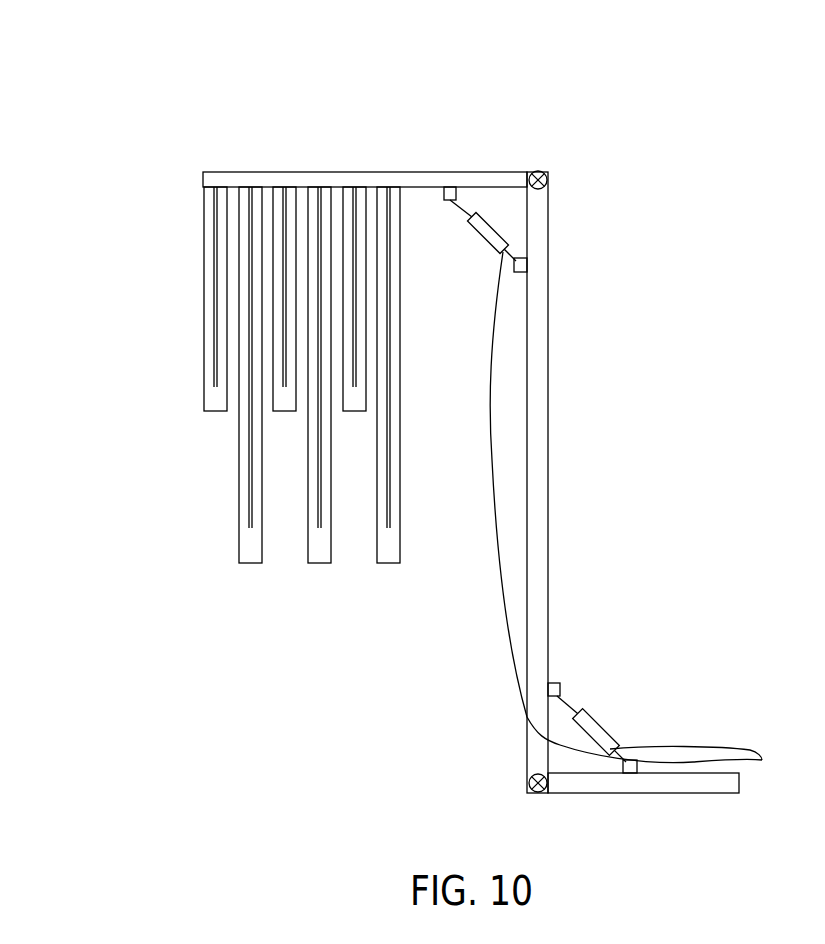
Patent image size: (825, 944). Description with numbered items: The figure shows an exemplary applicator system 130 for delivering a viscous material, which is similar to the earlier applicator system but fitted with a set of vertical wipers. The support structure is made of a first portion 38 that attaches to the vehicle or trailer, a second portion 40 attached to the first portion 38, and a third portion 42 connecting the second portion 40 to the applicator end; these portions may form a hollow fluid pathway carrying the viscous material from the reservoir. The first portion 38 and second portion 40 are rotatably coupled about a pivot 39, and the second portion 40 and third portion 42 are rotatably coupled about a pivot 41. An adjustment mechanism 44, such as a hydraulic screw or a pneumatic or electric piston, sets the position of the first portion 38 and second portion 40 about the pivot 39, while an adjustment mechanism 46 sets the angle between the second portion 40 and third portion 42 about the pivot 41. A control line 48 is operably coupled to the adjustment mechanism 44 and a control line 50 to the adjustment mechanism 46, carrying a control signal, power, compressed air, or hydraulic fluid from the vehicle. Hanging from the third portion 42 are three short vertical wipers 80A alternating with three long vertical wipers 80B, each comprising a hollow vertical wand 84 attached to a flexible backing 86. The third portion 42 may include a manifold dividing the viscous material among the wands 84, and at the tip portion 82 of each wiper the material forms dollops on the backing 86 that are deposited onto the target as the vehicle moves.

The applicator system 130 is at (545, 106).
The third portion 42 is at (432, 171).
The second portion 40 is at (549, 432).
The first portion 38 is at (673, 796).
The pivot 41 is at (549, 182).
The pivot 39 is at (527, 783).
The adjustment mechanism 46 is at (484, 238).
The adjustment mechanism 44 is at (602, 723).
The control line 50 is at (492, 452).
The control line 48 is at (750, 757).
The tip portion 82 is at (264, 404).
The short vertical wiper 80A is at (265, 329).
The long vertical wiper 80B is at (247, 564).
The hollow vertical wand 84 is at (214, 362).
The backing 86 is at (205, 385).